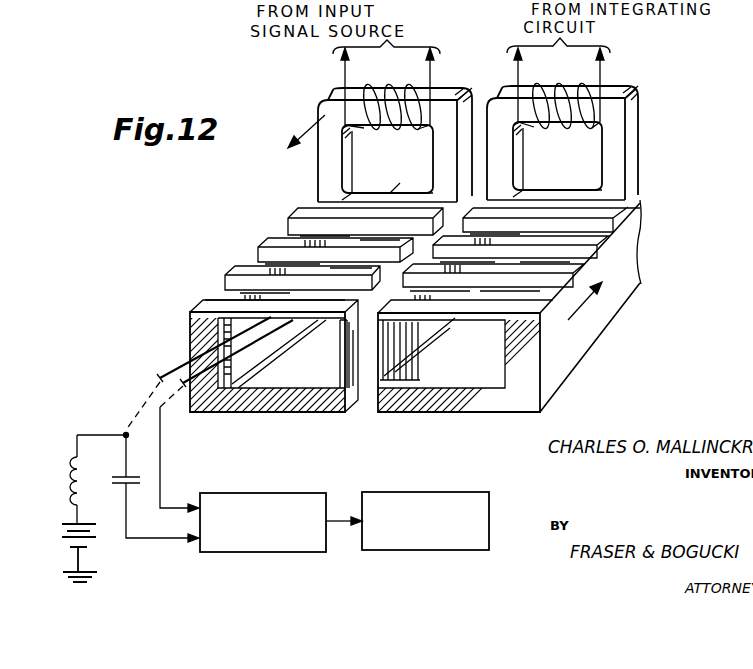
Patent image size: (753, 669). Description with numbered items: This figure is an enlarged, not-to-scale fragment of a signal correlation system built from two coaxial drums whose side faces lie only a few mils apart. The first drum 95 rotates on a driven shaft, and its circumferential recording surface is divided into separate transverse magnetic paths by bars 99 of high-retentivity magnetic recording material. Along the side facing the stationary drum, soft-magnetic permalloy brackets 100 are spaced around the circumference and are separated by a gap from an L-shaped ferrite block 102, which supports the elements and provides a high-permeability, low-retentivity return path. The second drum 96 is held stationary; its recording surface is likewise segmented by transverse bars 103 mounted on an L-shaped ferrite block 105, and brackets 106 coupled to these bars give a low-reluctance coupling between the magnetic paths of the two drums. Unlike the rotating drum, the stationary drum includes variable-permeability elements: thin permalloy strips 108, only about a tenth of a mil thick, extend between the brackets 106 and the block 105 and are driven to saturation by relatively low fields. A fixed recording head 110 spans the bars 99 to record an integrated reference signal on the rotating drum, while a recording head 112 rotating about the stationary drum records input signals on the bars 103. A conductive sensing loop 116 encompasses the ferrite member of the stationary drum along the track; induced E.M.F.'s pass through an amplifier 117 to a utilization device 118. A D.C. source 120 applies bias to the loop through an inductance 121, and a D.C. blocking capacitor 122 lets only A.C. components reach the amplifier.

The first drum 95 is at (680, 213).
The second drum 96 is at (283, 211).
The bars 99 is at (582, 248).
The brackets 100 is at (403, 355).
The L-shaped ferrite block 102 is at (445, 406).
The transverse bars 103 is at (205, 298).
The L-shaped ferrite block 105 is at (217, 407).
The brackets 106 is at (340, 341).
The thin strips 108 is at (347, 401).
The fixed recording head 110 is at (615, 88).
The recording head 112 is at (327, 97).
The conductive sensing loop 116 is at (172, 365).
The amplifier 117 is at (278, 493).
The utilization device 118 is at (447, 492).
The D.C. source 120 is at (70, 517).
The inductance 121 is at (70, 462).
The D.C. blocking capacitor 122 is at (117, 475).